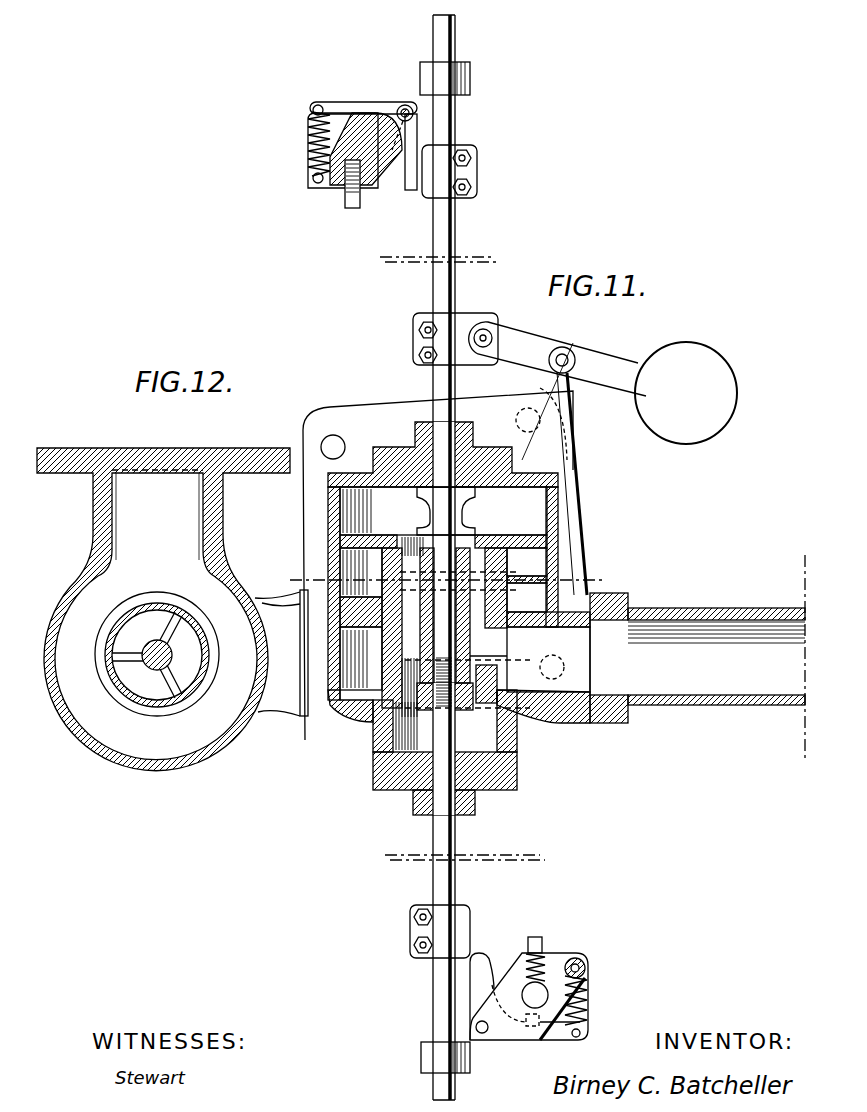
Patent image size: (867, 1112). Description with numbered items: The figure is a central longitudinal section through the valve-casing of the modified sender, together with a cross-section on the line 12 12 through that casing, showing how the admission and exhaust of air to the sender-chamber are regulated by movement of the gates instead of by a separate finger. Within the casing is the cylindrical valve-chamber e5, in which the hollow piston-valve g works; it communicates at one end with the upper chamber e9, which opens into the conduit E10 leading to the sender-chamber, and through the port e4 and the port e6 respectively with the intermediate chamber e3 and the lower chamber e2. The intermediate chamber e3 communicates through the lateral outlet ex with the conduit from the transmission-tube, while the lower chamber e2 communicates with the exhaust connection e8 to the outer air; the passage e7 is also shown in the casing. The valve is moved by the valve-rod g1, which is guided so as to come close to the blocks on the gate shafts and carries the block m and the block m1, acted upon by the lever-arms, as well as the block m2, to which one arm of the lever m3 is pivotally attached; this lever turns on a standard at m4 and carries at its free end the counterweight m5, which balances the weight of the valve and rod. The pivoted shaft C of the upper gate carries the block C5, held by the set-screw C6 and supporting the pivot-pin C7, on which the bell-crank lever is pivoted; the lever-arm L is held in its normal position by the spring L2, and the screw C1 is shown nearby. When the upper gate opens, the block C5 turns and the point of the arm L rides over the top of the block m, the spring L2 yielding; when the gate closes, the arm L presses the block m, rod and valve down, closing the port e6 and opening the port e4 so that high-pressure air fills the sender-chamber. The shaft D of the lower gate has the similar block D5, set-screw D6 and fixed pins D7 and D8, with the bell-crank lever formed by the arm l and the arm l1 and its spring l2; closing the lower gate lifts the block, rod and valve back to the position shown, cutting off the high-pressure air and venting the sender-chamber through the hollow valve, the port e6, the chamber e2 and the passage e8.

In FIG. 12, the lateral outlet ex is at (172, 609).
In FIG. 12, the section line 12 is at (293, 582).
In FIG. 11, the section line 12 is at (490, 579).
In FIG. 12, the hollow piston-valve g is at (203, 626).
In FIG. 11, the hollow piston-valve g is at (385, 612).
In FIG. 12, the valve-rod g1 is at (145, 675).
In FIG. 11, the valve-rod g1 is at (440, 292).
In FIG. 12, the cylindrical valve-chamber e5 is at (193, 660).
In FIG. 12, the port e4 is at (203, 688).
In FIG. 11, the port e4 is at (508, 590).
In FIG. 12, the exhaust connection e8 is at (212, 694).
In FIG. 11, the exhaust connection e8 is at (566, 665).
In FIG. 11, the conduit E10 is at (490, 513).
In FIG. 11, the upper chamber e9 is at (443, 511).
In FIG. 11, the intermediate chamber e3 is at (527, 562).
In FIG. 11, the lower chamber e2 is at (548, 659).
In FIG. 11, the passage e7 is at (470, 658).
In FIG. 11, the port e6 is at (510, 662).
In FIG. 11, the block m is at (449, 171).
In FIG. 11, the block m1 is at (440, 931).
In FIG. 11, the block m2 is at (455, 339).
In FIG. 11, the lever m3 is at (557, 359).
In FIG. 11, the pivot on standard m4 is at (572, 355).
In FIG. 11, the counterweight m5 is at (686, 393).
In FIG. 11, the bell-crank lever arm L is at (332, 106).
In FIG. 11, the spring L2 is at (308, 124).
In FIG. 11, the pivoted shaft C is at (330, 152).
In FIG. 11, the screw C1 is at (316, 184).
In FIG. 11, the block C5 is at (388, 186).
In FIG. 11, the set-screw C6 is at (351, 209).
In FIG. 11, the pivot-pin C7 is at (405, 105).
In FIG. 11, the bell-crank lever arm l is at (482, 996).
In FIG. 11, the bell-crank lever arm l1 is at (570, 1041).
In FIG. 11, the spring l2 is at (590, 1002).
In FIG. 11, the shaft of the lower gate D is at (540, 992).
In FIG. 11, the block D5 is at (541, 976).
In FIG. 11, the set-screw D6 is at (531, 953).
In FIG. 11, the fixed pin D7 is at (483, 1034).
In FIG. 11, the fixed pin D8 is at (585, 966).